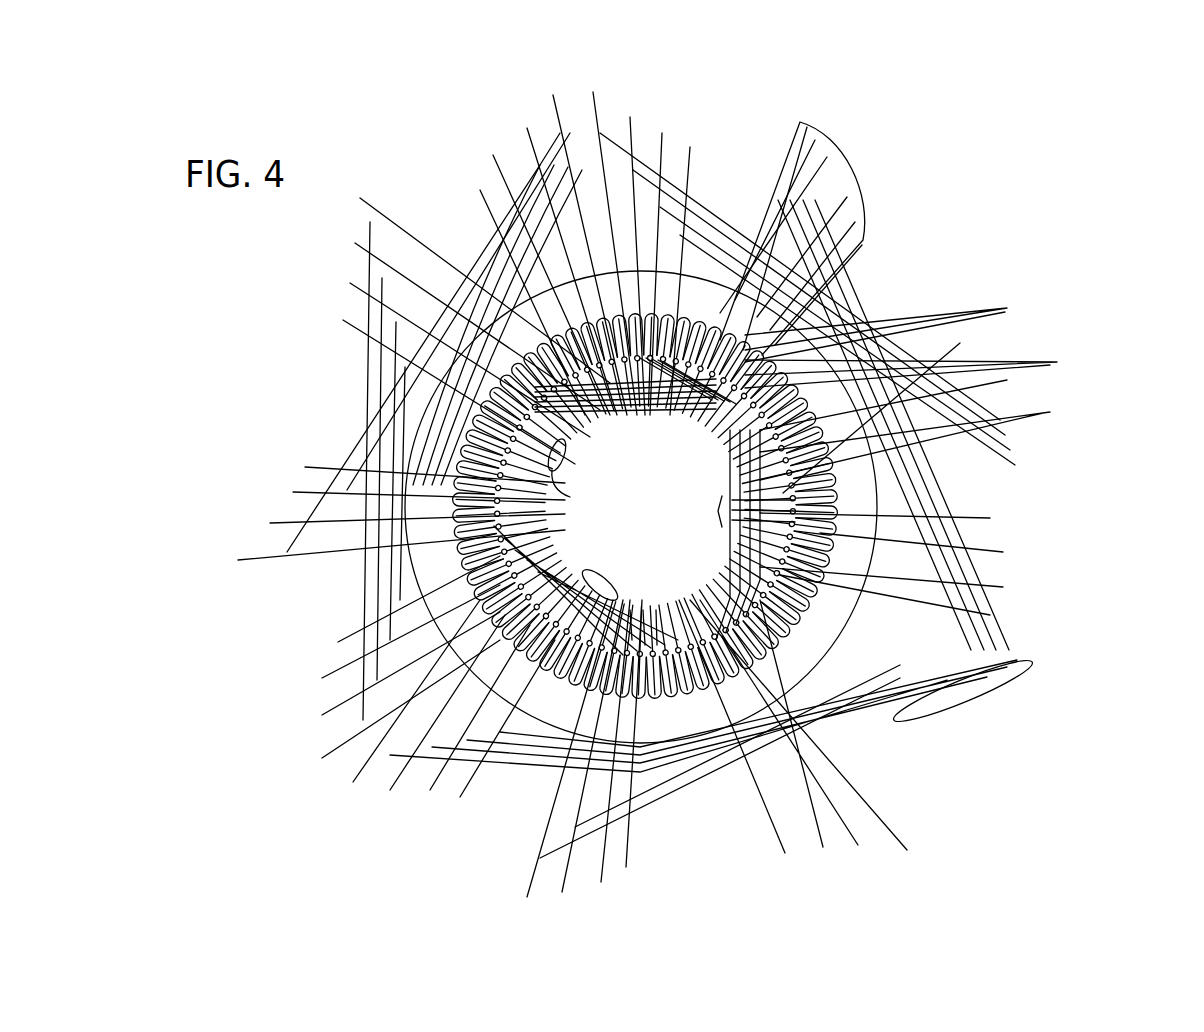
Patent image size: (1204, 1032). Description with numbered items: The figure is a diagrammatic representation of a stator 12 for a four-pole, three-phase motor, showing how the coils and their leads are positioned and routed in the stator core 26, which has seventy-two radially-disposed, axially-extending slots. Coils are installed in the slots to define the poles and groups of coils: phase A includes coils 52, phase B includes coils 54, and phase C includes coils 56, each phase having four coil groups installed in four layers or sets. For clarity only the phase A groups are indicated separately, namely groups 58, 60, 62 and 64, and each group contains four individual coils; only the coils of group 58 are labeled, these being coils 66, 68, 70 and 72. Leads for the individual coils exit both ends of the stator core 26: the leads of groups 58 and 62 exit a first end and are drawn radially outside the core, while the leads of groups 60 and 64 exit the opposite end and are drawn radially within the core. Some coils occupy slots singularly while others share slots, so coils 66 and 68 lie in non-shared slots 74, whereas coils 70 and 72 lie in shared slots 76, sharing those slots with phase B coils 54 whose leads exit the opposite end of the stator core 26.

The stator 12 is at (1139, 207).
The stator core 26 is at (863, 490).
The coils 52 is at (820, 102).
The coils 54 is at (280, 448).
The coils 56 is at (588, 73).
The group 58 is at (803, 118).
The group 60 is at (592, 574).
The group 62 is at (1033, 662).
The group 64 is at (571, 474).
The coil 66 is at (775, 192).
The coil 68 is at (762, 226).
The coil 70 is at (858, 238).
The coil 72 is at (855, 262).
The non-shared slots 74 is at (893, 327).
The shared slots 76 is at (917, 367).